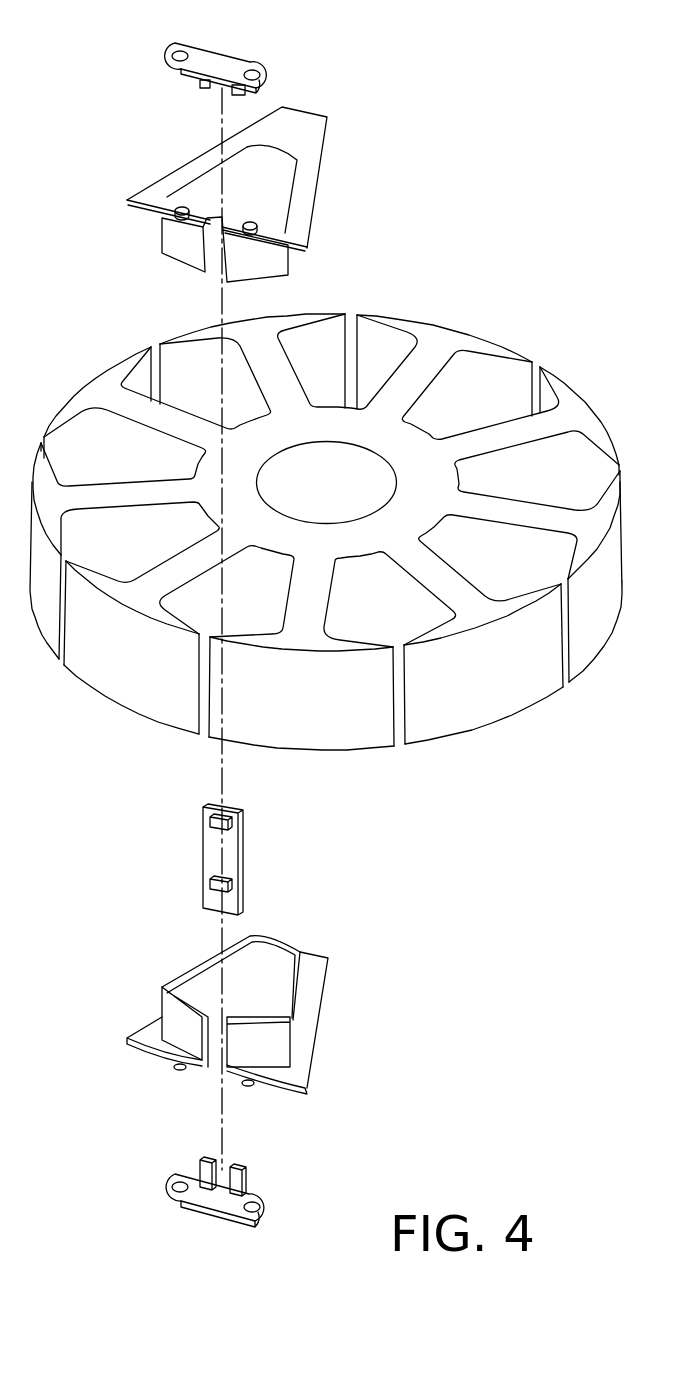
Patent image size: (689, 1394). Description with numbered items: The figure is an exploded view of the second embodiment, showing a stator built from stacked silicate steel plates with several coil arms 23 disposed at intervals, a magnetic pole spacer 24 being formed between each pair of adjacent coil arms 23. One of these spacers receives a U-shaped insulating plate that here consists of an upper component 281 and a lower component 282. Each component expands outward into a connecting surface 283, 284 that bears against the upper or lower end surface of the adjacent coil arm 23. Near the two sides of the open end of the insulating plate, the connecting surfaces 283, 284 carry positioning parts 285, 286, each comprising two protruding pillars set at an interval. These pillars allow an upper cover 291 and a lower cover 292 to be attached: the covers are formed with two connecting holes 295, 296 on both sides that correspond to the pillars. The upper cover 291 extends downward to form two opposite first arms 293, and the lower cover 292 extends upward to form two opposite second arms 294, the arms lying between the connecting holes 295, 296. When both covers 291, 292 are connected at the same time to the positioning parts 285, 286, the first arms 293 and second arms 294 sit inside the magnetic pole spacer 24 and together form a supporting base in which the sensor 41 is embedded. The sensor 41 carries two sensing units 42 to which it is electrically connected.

The coil arm 23 is at (326, 532).
The magnetic pole spacer 24 is at (262, 617).
The sensor 41 is at (231, 859).
The sensing unit 42 is at (210, 820).
The upper component 281 is at (170, 235).
The lower component 282 is at (237, 1021).
The connecting surface 283 is at (245, 194).
The connecting surface 284 is at (305, 1073).
The positioning part 285 is at (250, 230).
The positioning part 286 is at (180, 1068).
The upper cover 291 is at (235, 70).
The lower cover 292 is at (164, 1188).
The first arm 293 is at (200, 88).
The second arm 294 is at (200, 1162).
The connecting hole 295 is at (262, 70).
The connecting hole 296 is at (178, 1187).